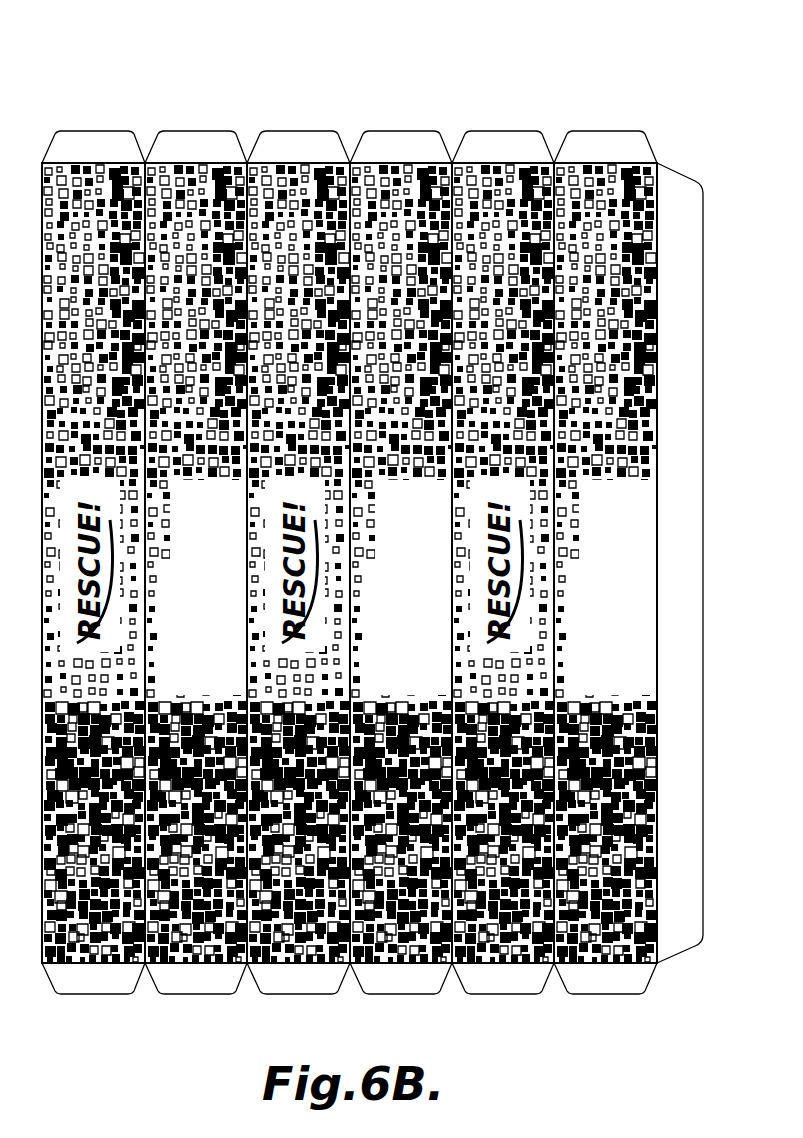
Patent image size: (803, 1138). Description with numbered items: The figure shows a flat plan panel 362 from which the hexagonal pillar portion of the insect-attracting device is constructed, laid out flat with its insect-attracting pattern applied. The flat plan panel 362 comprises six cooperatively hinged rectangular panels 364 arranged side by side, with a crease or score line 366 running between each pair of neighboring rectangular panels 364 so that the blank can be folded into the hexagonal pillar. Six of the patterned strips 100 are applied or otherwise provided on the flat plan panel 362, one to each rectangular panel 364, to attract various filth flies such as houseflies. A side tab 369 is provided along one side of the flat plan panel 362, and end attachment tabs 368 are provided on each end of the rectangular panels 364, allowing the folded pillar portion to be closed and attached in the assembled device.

The flat plan panel 362 is at (532, 95).
The strip 100 is at (572, 168).
The rectangular panel 364 is at (82, 965).
The crease or score line 366 is at (162, 190).
The end attachment tab 368 is at (66, 150).
The side tab 369 is at (698, 522).